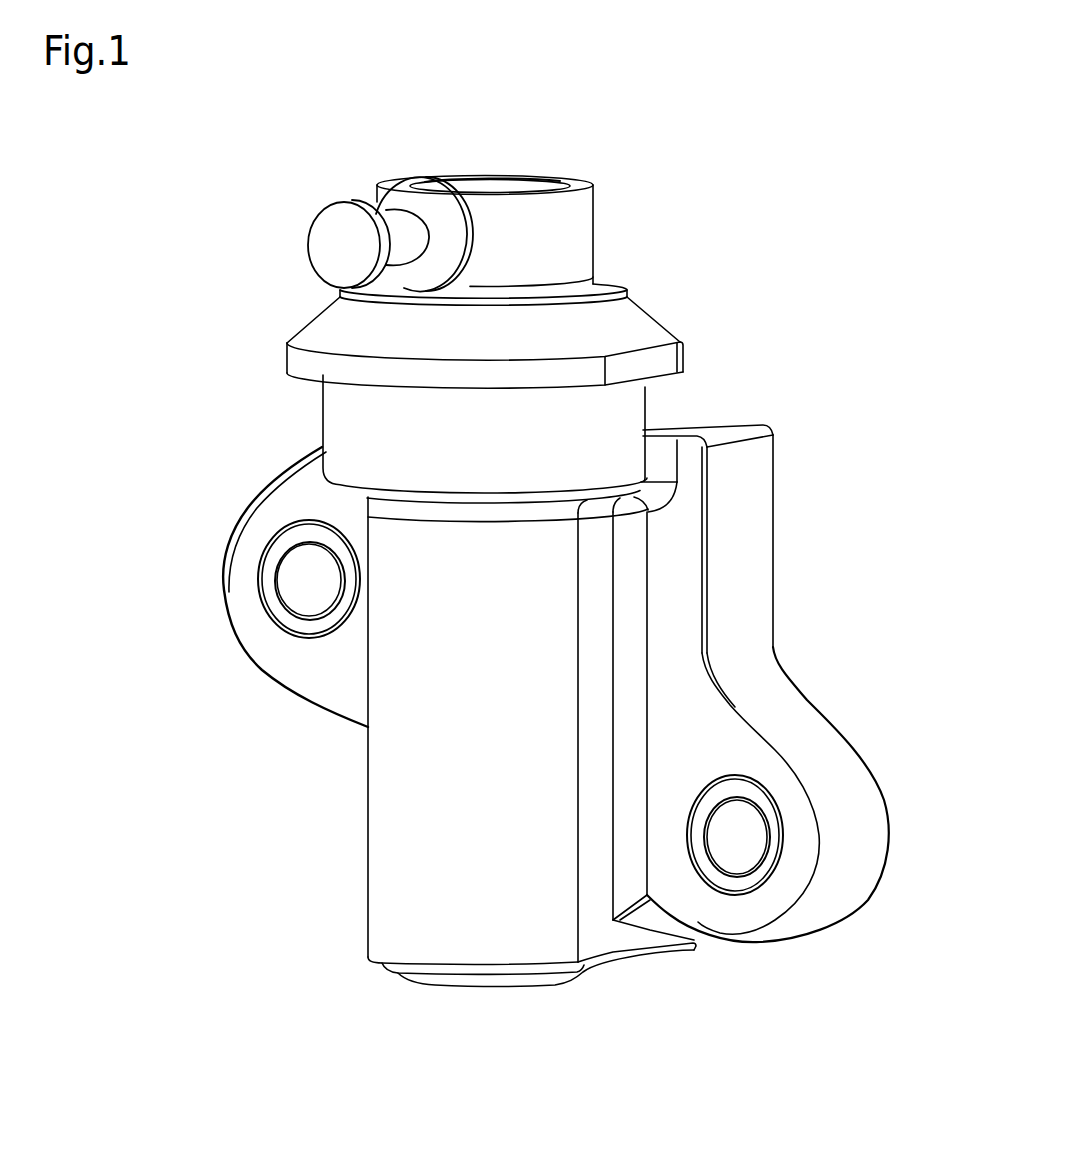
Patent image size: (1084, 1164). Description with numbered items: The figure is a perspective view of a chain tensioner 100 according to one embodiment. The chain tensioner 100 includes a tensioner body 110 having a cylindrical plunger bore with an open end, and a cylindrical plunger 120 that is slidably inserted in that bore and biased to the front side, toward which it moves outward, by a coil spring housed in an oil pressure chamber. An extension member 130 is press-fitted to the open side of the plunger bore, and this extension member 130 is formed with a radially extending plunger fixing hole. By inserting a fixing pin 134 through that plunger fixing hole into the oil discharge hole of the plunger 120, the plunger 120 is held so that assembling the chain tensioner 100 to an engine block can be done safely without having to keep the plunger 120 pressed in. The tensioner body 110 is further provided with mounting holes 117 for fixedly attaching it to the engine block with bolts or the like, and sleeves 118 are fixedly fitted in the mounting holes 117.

The chain tensioner 100 is at (263, 101).
The tensioner body 110 is at (430, 870).
The mounting holes 117 is at (327, 592).
The sleeves 118 is at (700, 820).
The plunger 120 is at (500, 175).
The extension member 130 is at (547, 246).
The fixing pin 134 is at (343, 247).